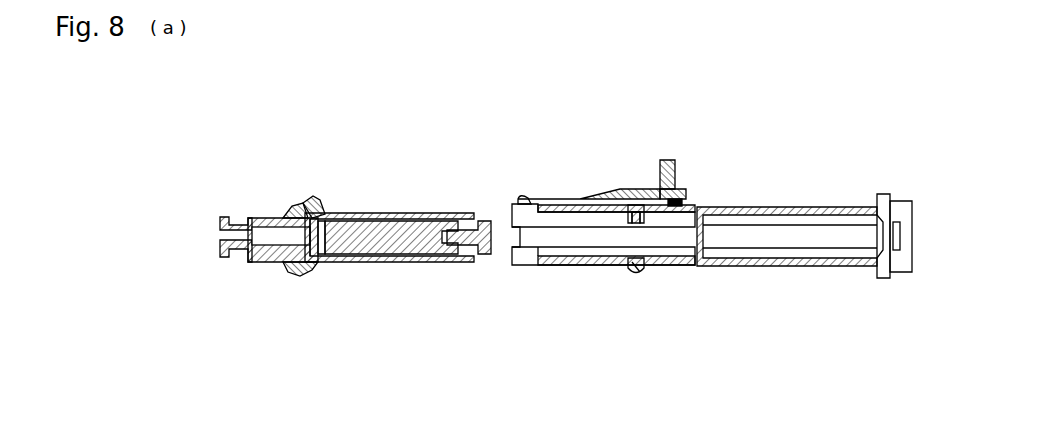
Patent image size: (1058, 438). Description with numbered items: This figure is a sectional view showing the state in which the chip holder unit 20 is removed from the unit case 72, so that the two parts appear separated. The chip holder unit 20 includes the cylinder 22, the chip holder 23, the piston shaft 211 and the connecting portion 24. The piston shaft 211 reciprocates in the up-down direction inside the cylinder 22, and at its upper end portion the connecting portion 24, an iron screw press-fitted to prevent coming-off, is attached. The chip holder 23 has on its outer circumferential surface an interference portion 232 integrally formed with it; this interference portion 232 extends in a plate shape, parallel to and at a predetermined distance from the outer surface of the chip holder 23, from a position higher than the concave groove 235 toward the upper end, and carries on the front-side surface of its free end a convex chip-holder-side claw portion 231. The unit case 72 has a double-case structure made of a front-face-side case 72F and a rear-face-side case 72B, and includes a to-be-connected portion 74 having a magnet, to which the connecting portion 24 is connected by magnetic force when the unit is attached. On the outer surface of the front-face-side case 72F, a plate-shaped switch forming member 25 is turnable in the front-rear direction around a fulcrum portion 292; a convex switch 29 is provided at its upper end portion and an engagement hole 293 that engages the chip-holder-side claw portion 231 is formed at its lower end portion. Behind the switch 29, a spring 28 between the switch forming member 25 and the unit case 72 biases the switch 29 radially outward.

The chip holder unit 20 is at (336, 252).
The cylinder 22 is at (389, 265).
The chip holder 23 is at (292, 237).
The connecting portion 24 is at (488, 256).
The switch forming member 25 is at (602, 158).
The spring (elastic member) 28 is at (688, 202).
The switch 29 is at (672, 162).
The unit case 72 is at (729, 215).
The front-face-side case 72F is at (782, 207).
The rear-face-side case 72B is at (793, 266).
The to-be-connected portion 74 is at (900, 232).
The piston shaft 211 is at (400, 240).
The chip-holder-side claw portion 231 is at (310, 203).
The interference portion 232 is at (288, 208).
The concave groove 235 is at (238, 260).
The fulcrum portion 292 is at (640, 206).
The engagement hole 293 is at (522, 200).